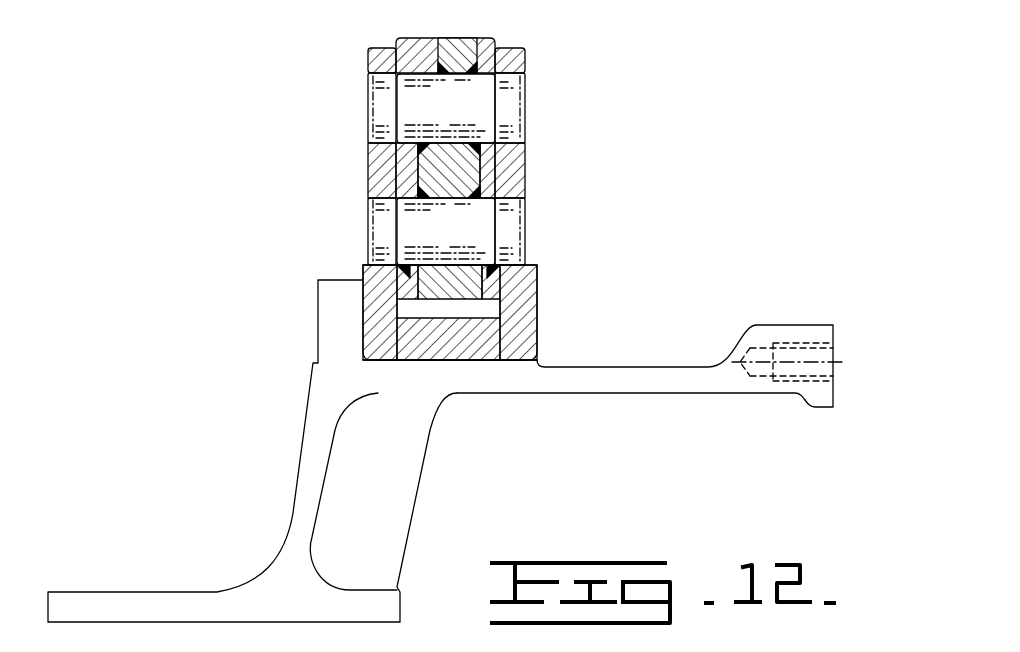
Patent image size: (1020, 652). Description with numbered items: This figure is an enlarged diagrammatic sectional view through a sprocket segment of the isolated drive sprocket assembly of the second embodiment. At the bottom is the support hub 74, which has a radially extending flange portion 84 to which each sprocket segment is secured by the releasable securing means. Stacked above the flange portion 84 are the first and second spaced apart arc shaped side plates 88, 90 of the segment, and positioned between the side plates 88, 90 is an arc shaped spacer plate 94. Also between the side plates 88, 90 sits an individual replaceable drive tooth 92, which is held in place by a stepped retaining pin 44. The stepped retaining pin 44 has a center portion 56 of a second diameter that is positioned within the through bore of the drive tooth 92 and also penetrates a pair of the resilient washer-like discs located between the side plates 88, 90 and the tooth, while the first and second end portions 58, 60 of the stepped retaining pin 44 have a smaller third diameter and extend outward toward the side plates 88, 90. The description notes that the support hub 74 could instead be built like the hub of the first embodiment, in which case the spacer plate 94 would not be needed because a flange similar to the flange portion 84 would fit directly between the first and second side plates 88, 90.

The stepped retaining pin 44 is at (466, 114).
The center portion 56 is at (448, 74).
The first end portion 58 is at (524, 170).
The second end portion 60 is at (369, 170).
The support hub 74 is at (520, 387).
The flange portion 84 is at (318, 312).
The first side plate 88 is at (524, 60).
The second side plate 90 is at (369, 70).
The drive tooth 92 is at (476, 39).
The spacer plate 94 is at (535, 342).